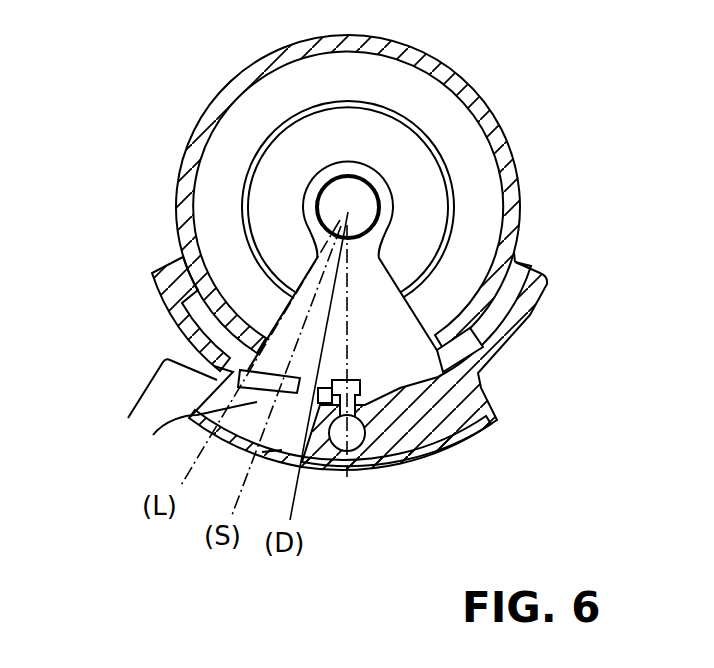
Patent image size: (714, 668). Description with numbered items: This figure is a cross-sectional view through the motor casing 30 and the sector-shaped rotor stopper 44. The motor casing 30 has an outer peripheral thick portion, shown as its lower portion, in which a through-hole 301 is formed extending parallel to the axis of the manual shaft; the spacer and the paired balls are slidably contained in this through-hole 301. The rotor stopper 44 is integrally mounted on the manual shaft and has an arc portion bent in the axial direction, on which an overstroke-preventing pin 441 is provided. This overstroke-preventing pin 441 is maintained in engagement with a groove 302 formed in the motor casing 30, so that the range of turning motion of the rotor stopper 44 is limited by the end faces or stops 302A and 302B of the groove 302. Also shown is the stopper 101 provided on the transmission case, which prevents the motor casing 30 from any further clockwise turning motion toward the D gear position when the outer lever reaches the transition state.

The motor casing 30 is at (479, 118).
The rotor stopper 44 is at (378, 362).
The overstroke-preventing pin 441 is at (305, 412).
The through-hole 301 is at (362, 447).
The groove 302 is at (191, 419).
The stop 302A is at (214, 377).
The stop 302B is at (275, 452).
The stopper 101 is at (150, 408).